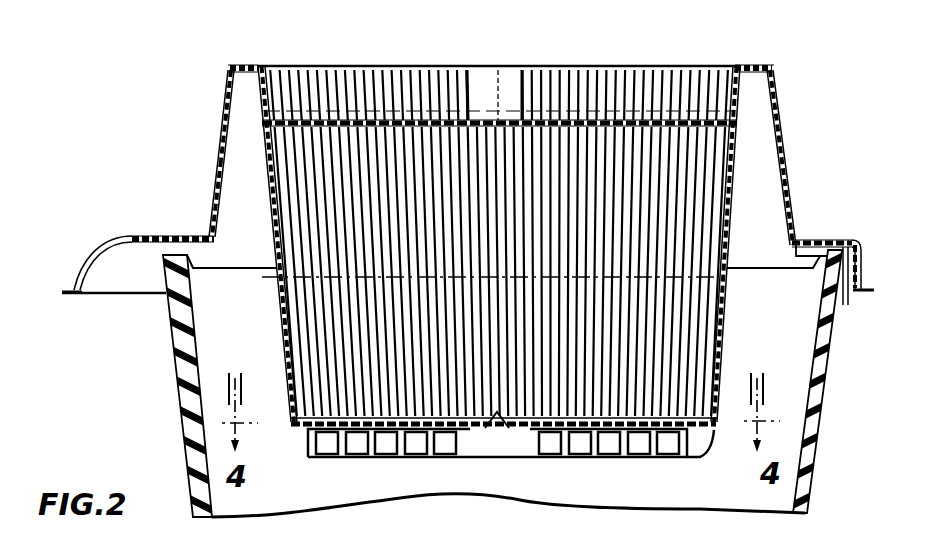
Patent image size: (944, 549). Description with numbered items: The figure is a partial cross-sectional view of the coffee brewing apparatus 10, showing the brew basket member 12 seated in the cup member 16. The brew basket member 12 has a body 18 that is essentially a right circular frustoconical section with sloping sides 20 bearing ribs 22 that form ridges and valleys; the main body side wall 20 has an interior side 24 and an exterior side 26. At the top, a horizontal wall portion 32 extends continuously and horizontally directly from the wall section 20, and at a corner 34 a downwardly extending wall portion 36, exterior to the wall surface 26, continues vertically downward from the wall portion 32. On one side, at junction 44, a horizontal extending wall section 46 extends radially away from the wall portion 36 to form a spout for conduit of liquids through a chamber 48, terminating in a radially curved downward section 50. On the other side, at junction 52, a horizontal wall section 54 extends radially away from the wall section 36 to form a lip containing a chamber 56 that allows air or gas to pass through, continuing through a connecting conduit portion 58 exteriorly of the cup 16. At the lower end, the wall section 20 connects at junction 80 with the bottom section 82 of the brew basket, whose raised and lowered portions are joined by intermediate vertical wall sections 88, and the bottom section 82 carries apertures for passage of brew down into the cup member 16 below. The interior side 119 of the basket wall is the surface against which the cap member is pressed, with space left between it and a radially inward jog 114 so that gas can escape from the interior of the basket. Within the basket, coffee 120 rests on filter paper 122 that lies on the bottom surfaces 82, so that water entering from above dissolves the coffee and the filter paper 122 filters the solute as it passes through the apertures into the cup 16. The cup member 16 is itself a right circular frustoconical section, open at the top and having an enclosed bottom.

The apparatus 10 is at (615, 62).
The brew basket member 12 is at (742, 323).
The cup member 16 is at (170, 380).
The body 18 is at (742, 346).
The sloping side wall 20 is at (746, 212).
The ribs 22 is at (720, 156).
The interior side 24 is at (708, 242).
The exterior side 26 is at (782, 133).
The horizontal wall portion 32 is at (236, 66).
The corner 34 is at (774, 67).
The downwardly extending wall portion 36 is at (776, 92).
The junction 44 is at (205, 225).
The horizontal extending wall section 46 is at (140, 236).
The chamber 48 is at (113, 270).
The radially curved downward section 50 is at (85, 258).
The junction 52 is at (812, 242).
The horizontal wall section 54 is at (853, 262).
The chamber 56 is at (806, 262).
The connecting conduit portion 58 is at (849, 298).
The junction 80 is at (716, 435).
The bottom section 82 is at (698, 447).
The intermediate vertical wall sections 88 is at (643, 447).
The radially inward jog 114 is at (500, 80).
The interior side 119 is at (282, 68).
The coffee 120 is at (370, 310).
The filter paper 122 is at (415, 412).